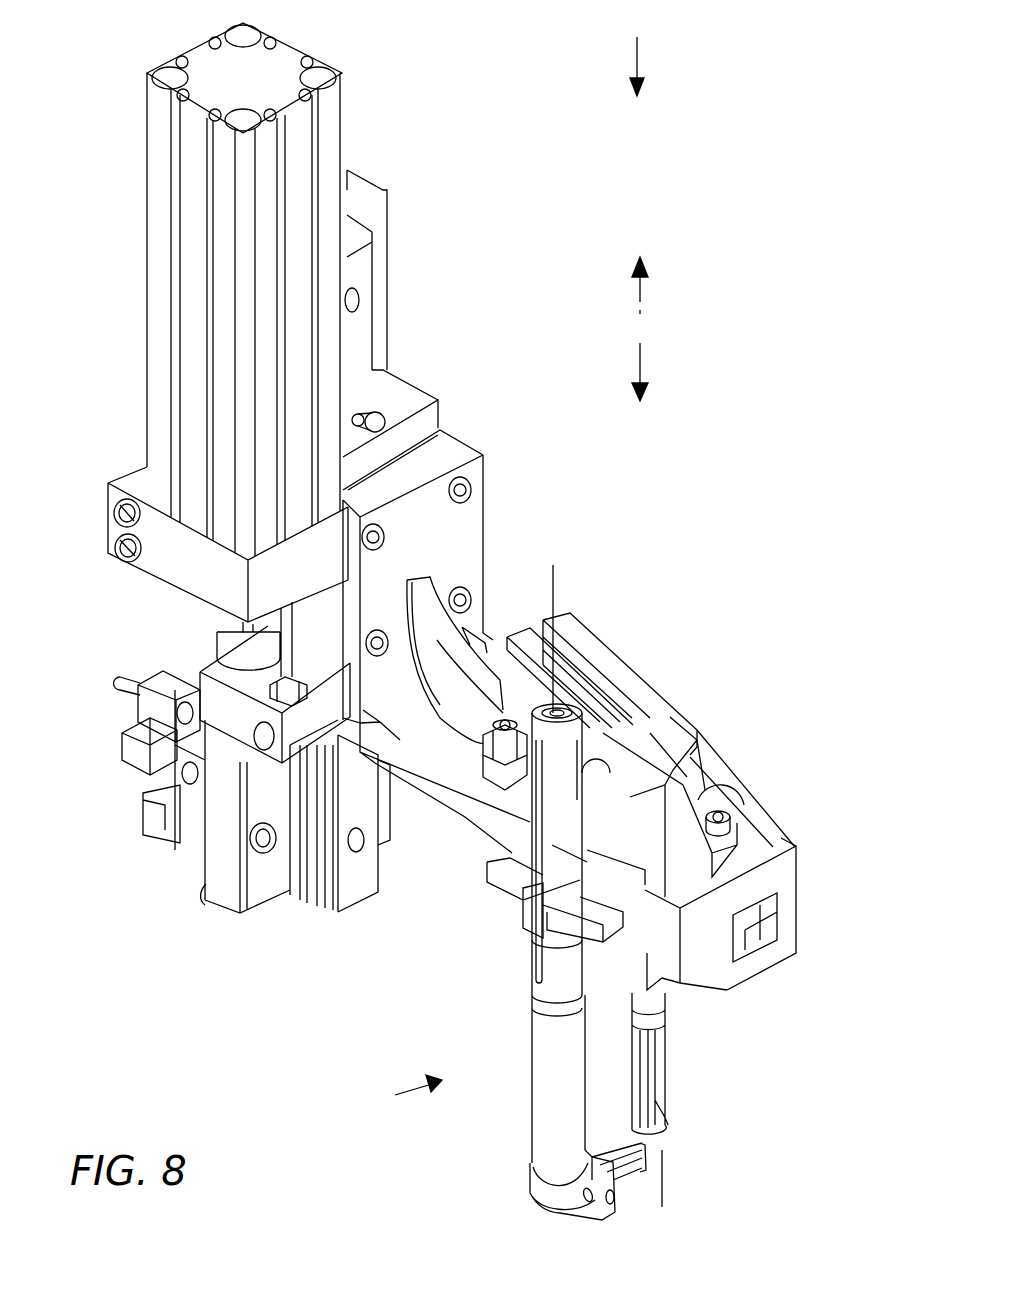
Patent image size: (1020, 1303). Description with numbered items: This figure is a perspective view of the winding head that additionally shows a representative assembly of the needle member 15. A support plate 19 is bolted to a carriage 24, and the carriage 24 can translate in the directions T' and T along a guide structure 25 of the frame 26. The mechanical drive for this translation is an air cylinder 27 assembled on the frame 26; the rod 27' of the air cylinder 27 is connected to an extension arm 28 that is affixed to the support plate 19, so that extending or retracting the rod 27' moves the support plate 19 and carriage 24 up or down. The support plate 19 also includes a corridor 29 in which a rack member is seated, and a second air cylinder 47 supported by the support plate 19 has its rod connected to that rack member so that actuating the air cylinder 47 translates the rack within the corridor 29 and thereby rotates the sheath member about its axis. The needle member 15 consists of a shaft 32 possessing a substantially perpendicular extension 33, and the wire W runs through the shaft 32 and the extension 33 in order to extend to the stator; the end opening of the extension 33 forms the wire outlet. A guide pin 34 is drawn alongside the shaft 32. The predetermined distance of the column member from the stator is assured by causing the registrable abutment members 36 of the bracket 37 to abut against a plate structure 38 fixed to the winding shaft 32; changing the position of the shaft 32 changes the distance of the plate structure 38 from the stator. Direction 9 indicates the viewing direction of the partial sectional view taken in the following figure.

The direction 9 is at (650, 57).
The direction T is at (678, 285).
The direction T' is at (676, 372).
The needle member 15 is at (397, 1091).
The support plate 19 is at (750, 847).
The carriage 24 is at (438, 400).
The guide structure 25 is at (355, 893).
The frame 26 is at (212, 897).
The air cylinder 27 is at (273, 322).
The rod 27' is at (203, 654).
The extension arm 28 is at (172, 705).
The corridor 29 is at (770, 903).
The shaft 32 is at (552, 1126).
The extension 33 is at (645, 1185).
The guide pin 34 is at (650, 1143).
The registrable abutment members 36 is at (705, 805).
The bracket 37 is at (713, 806).
The plate structure 38 is at (520, 920).
The air cylinder 47 is at (612, 660).
The wire W is at (732, 1160).